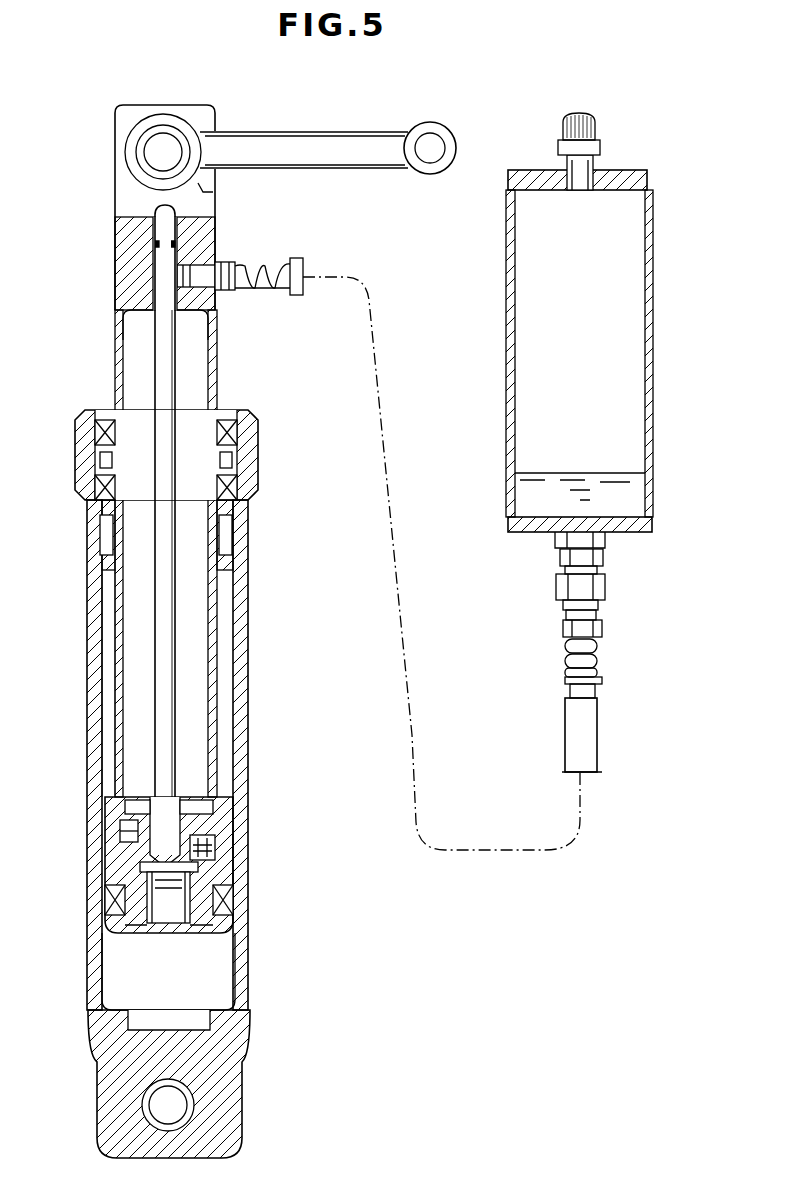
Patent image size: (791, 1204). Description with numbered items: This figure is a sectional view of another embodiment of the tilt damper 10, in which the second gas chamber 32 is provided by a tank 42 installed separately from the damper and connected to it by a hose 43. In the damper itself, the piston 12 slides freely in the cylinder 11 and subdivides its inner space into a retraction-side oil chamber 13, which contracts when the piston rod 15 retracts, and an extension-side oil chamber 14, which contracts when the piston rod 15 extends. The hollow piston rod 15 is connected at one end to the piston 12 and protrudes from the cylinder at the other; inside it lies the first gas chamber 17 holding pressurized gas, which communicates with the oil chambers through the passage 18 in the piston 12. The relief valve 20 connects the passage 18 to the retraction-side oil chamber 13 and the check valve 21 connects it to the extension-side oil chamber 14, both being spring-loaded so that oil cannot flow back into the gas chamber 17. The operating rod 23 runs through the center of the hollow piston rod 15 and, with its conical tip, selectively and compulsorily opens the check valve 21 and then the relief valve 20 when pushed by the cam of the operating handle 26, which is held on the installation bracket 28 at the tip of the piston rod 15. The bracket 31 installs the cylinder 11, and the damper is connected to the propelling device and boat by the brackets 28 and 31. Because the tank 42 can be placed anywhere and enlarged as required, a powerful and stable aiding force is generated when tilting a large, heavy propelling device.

The tilt damper 10 is at (312, 620).
The cylinder 11 is at (240, 918).
The piston 12 is at (133, 868).
The retraction-side oil chamber 13 is at (222, 987).
The extension-side oil chamber 14 is at (227, 742).
The piston rod 15 is at (215, 362).
The gas chamber 17 is at (143, 727).
The passage 18 is at (140, 828).
The relief valve 20 is at (123, 880).
The check valve 21 is at (205, 847).
The operating rod 23 is at (160, 368).
The operating handle 26 is at (298, 136).
The installation bracket 28 is at (125, 190).
The bracket 31 is at (228, 1078).
The second gas chamber 32 is at (546, 442).
The tank 42 is at (505, 415).
The hose 43 is at (593, 730).